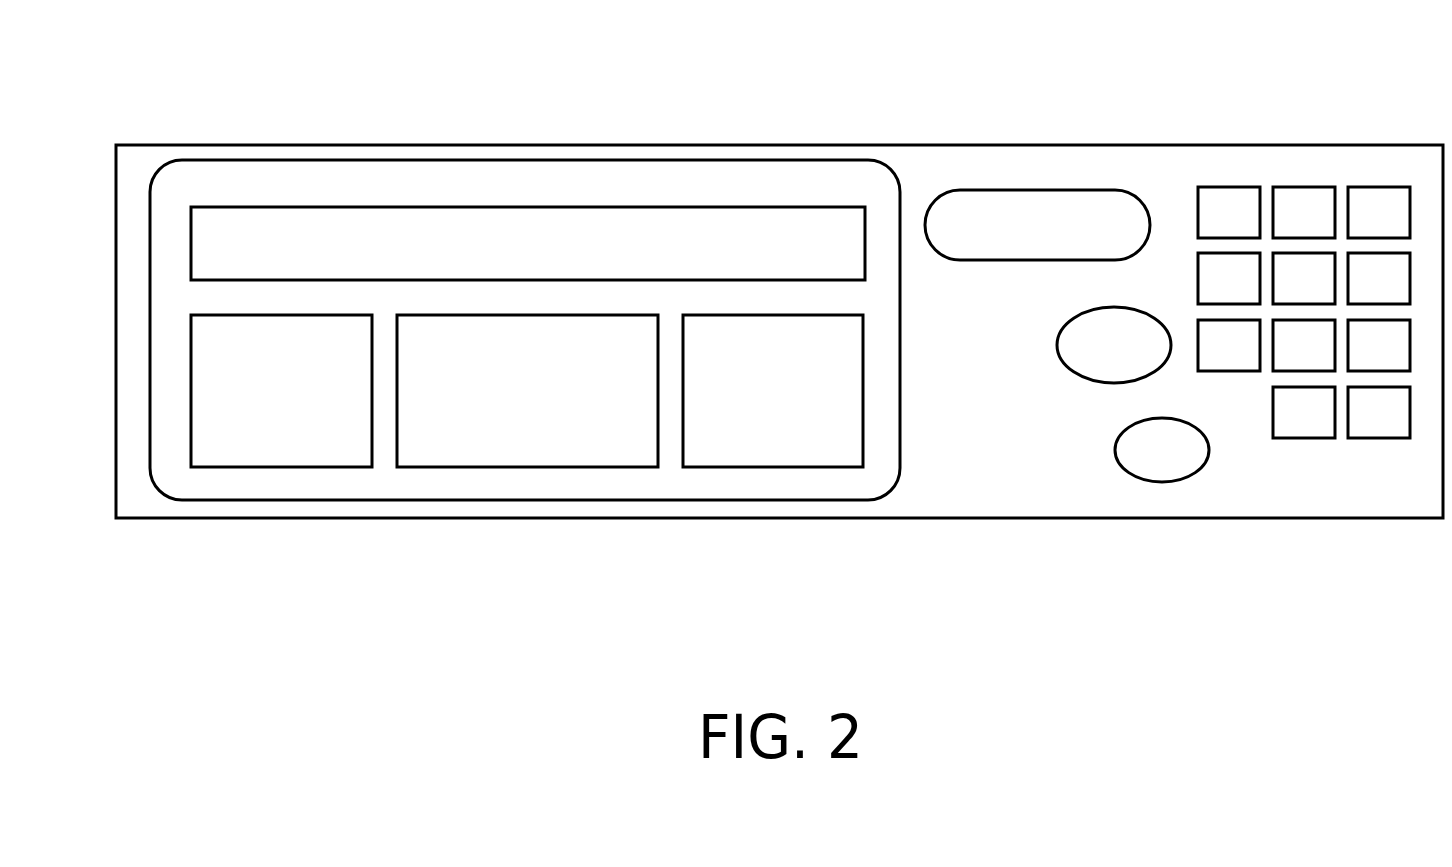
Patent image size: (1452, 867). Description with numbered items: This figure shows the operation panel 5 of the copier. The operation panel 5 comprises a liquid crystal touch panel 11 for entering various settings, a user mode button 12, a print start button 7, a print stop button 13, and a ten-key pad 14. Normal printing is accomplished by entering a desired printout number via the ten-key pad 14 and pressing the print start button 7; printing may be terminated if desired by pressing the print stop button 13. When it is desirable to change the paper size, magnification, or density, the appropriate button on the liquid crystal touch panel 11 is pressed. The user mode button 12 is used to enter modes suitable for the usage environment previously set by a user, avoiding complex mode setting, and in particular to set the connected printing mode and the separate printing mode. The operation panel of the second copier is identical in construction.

The operation panel 5 is at (770, 108).
The liquid crystal touch panel 11 is at (580, 182).
The user mode button 12 is at (1068, 198).
The print start button 7 is at (1093, 370).
The print stop button 13 is at (1160, 472).
The ten-key pad 14 is at (1350, 170).